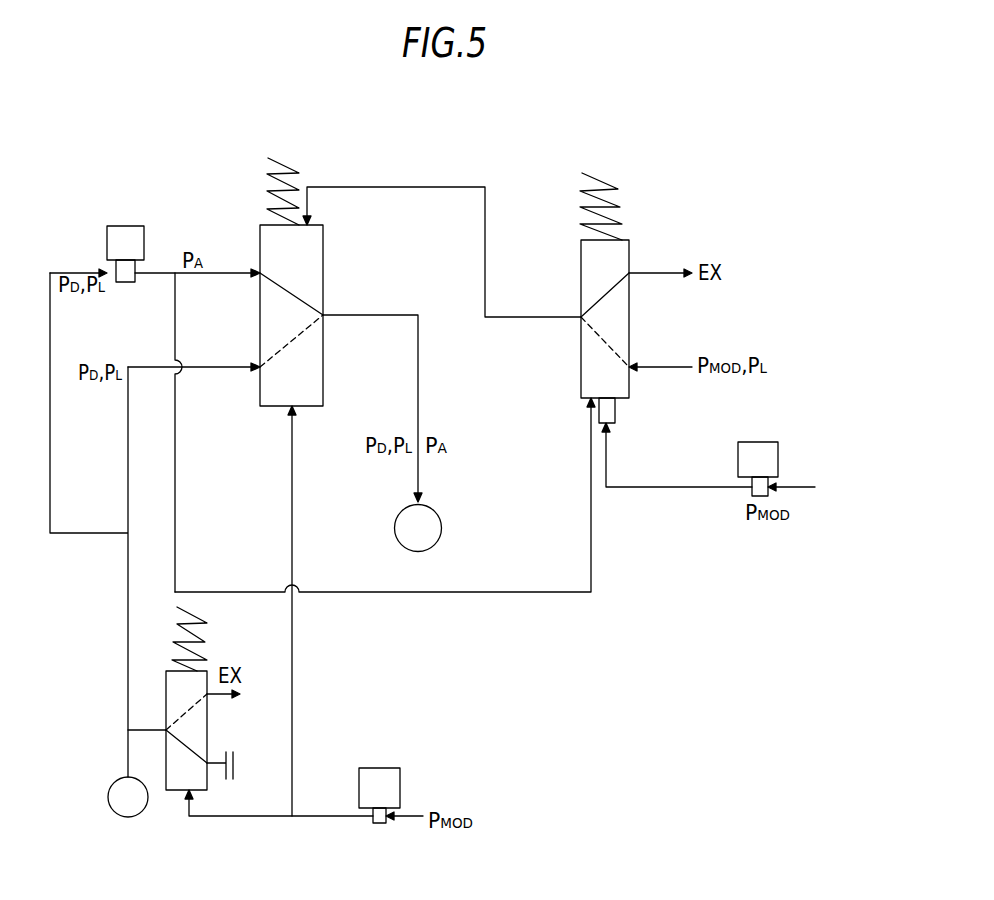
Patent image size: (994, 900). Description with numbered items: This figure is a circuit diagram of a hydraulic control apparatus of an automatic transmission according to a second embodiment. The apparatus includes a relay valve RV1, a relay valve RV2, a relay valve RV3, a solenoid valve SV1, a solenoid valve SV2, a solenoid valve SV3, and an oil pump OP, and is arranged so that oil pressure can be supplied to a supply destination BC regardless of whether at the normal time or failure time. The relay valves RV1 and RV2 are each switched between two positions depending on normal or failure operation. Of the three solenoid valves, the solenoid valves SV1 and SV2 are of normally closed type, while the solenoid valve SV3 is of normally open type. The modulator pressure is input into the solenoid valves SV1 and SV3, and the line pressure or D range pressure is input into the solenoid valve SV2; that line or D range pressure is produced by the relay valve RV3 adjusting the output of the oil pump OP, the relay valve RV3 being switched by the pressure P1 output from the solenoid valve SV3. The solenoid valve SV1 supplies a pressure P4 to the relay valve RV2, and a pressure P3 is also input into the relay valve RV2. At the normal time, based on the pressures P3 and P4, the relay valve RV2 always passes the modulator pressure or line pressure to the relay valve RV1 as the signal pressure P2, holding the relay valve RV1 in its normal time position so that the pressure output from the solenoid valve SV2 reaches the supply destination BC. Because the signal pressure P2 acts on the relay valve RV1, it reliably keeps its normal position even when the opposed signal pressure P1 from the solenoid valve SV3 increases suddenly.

The relay valve RV1 is at (323, 283).
The relay valve RV2 is at (629, 327).
The relay valve RV3 is at (167, 700).
The solenoid valve SV1 is at (778, 470).
The solenoid valve SV2 is at (107, 250).
The solenoid valve SV3 is at (400, 786).
The supply destination BC is at (442, 530).
The oil pump OP is at (112, 783).
The pressure P1 is at (303, 611).
The pressure P2 is at (398, 176).
The pressure P3 is at (576, 423).
The pressure P4 is at (677, 455).